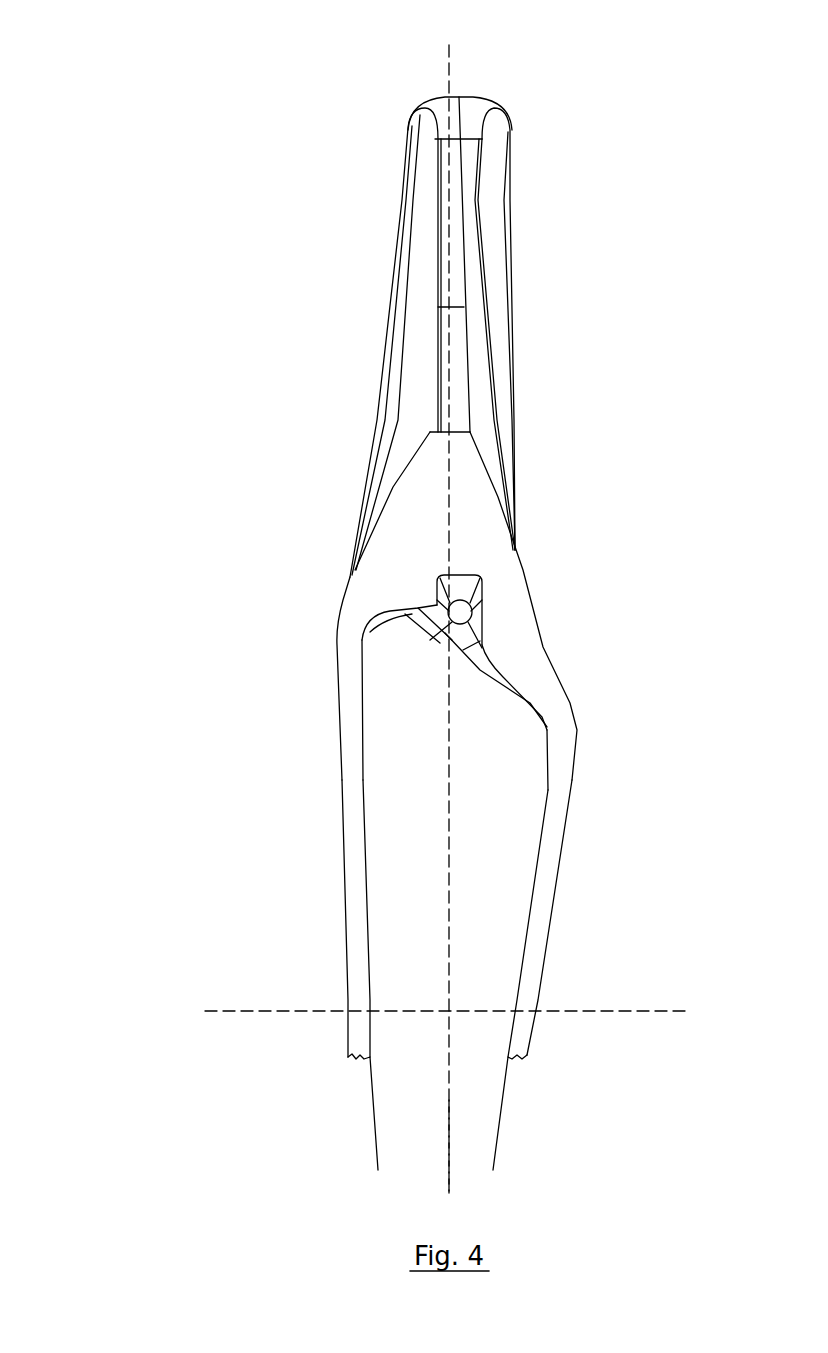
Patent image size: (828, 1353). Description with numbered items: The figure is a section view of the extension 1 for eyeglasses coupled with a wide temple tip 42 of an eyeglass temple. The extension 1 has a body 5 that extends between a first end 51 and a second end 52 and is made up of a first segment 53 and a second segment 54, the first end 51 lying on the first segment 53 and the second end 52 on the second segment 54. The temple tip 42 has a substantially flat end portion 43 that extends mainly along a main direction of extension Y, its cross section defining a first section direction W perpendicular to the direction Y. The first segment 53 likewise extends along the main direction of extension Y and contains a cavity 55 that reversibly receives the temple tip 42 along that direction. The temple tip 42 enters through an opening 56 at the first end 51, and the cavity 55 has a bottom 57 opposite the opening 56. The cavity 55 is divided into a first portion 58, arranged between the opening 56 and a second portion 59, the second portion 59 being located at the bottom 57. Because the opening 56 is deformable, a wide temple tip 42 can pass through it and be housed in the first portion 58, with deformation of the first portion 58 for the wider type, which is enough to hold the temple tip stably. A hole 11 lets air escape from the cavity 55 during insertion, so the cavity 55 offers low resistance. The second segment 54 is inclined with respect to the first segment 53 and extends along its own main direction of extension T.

The extension 1 is at (208, 410).
The body 5 is at (517, 400).
The hole 11 is at (440, 607).
The temple tip 42 is at (480, 1140).
The end portion 43 is at (408, 787).
The first end 51 is at (348, 1057).
The second end 52 is at (432, 111).
The first segment 53 is at (348, 903).
The second segment 54 is at (387, 352).
The cavity 55 is at (487, 663).
The opening 56 is at (510, 1050).
The bottom 57 is at (460, 574).
The first portion 58 is at (550, 740).
The second portion 59 is at (477, 600).
The main direction of extension T is at (449, 73).
The first section direction W is at (600, 1007).
The main direction of extension Y is at (448, 1153).